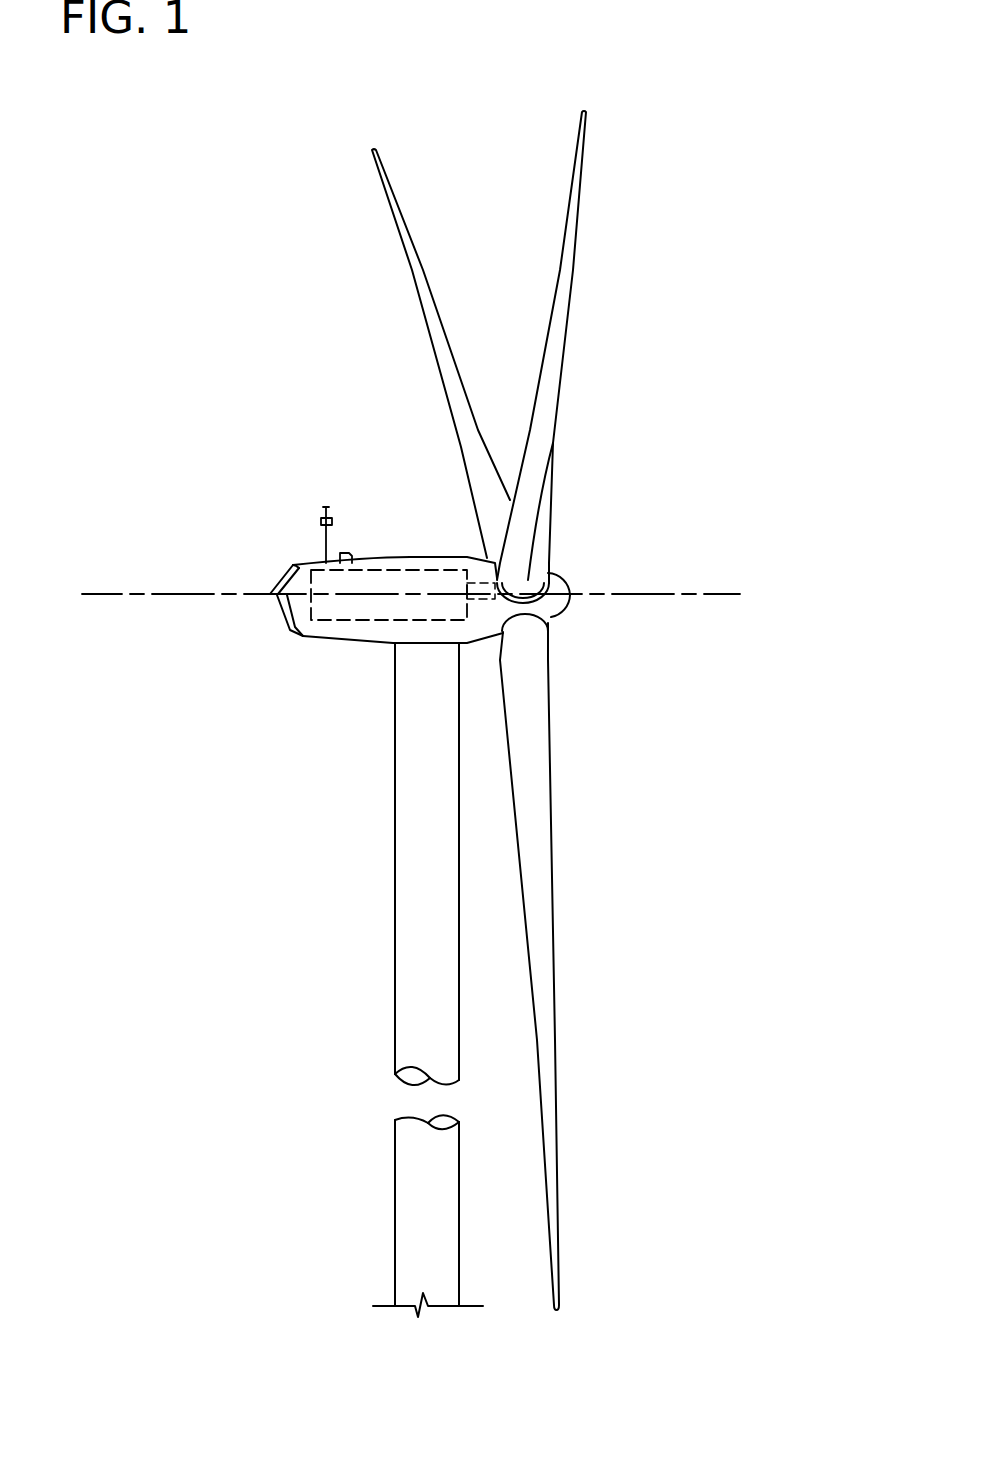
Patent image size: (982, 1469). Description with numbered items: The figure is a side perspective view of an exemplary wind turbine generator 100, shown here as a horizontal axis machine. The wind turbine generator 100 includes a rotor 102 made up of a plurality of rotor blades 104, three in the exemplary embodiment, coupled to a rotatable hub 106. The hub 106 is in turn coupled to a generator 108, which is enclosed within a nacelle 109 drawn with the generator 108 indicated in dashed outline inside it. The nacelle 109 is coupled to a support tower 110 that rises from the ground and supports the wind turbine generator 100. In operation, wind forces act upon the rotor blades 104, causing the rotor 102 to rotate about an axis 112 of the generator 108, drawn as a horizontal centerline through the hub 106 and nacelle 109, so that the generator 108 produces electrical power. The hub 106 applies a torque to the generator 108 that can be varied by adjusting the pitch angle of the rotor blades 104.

The wind turbine generator 100 is at (258, 194).
The rotor 102 is at (482, 148).
The rotor blades 104 is at (410, 233).
The hub 106 is at (567, 610).
The generator 108 is at (345, 620).
The nacelle 109 is at (405, 555).
The support tower 110 is at (415, 903).
The axis 112 is at (707, 594).